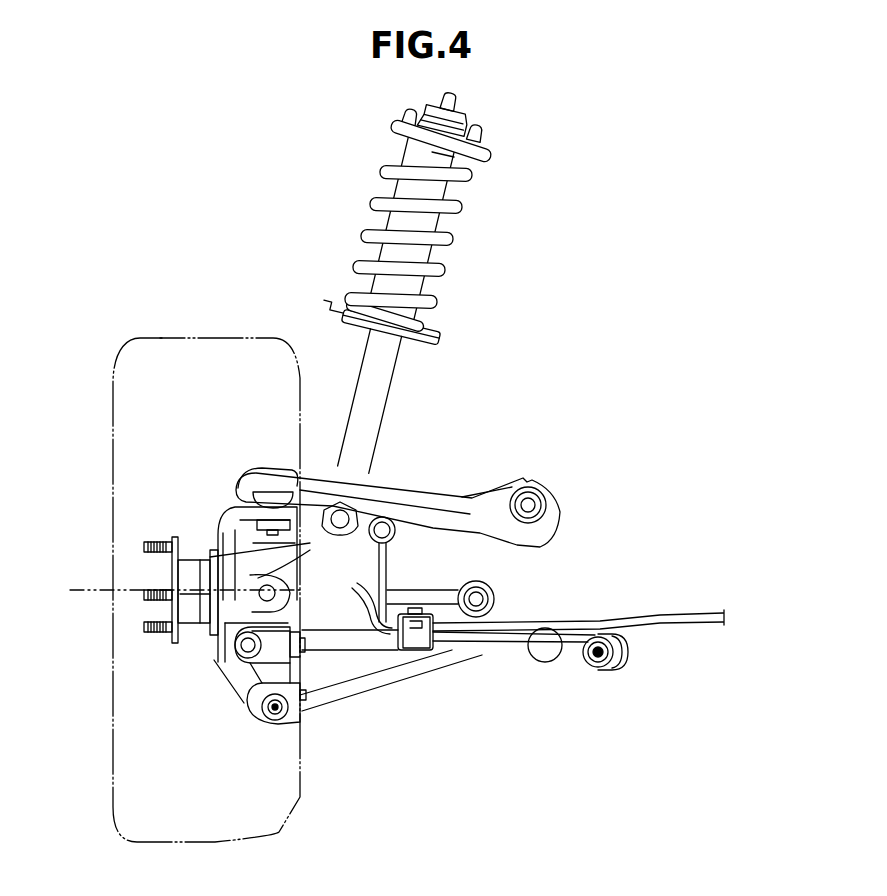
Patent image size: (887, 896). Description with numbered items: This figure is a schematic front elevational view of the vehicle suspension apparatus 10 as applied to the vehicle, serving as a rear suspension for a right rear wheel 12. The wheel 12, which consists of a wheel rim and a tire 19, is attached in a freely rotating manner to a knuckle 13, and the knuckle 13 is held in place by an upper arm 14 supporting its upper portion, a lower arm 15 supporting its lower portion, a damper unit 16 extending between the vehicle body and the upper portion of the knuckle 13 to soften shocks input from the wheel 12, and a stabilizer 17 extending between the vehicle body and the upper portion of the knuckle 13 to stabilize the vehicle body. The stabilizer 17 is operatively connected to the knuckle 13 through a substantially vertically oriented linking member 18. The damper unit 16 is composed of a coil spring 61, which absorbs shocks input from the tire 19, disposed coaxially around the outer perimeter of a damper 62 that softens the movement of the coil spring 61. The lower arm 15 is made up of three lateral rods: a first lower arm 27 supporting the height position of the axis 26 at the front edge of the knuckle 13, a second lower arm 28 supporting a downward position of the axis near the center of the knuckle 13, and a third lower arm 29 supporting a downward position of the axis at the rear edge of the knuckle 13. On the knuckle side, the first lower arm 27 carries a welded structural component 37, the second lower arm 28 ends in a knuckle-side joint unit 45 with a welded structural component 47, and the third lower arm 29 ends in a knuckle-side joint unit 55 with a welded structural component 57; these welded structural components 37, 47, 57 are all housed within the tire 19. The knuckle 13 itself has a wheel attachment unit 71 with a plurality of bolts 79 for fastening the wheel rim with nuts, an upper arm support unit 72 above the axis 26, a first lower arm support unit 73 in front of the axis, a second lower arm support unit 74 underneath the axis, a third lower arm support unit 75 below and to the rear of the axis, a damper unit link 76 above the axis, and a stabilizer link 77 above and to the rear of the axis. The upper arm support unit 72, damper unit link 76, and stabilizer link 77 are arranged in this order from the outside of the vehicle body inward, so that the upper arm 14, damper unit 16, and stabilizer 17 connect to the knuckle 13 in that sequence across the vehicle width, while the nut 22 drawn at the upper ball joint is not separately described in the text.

The vehicle suspension apparatus 10 is at (207, 78).
The wheel 12 is at (149, 331).
The knuckle 13 is at (193, 663).
The upper arm 14 is at (388, 480).
The lower arm 15 is at (404, 713).
The damper unit 16 is at (478, 224).
The stabilizer 17 is at (668, 605).
The linking member 18 is at (388, 578).
The tire 19 is at (180, 338).
The ball joint nut 22 is at (288, 493).
The axis 26 is at (92, 589).
The first lower arm 27 is at (423, 582).
The second lower arm 28 is at (440, 683).
The third lower arm 29 is at (483, 654).
The welded structural component 37 is at (292, 592).
The knuckle-side joint unit 45 is at (282, 723).
The welded structural component 47 is at (301, 698).
The knuckle-side joint unit 55 is at (273, 653).
The welded structural component 57 is at (301, 645).
The coil spring 61 is at (465, 206).
The damper 62 is at (434, 255).
The wheel attachment unit 71 is at (205, 565).
The upper arm support unit 72 is at (275, 512).
The first lower arm support unit 73 is at (247, 583).
The second lower arm support unit 74 is at (248, 717).
The third lower arm support unit 75 is at (230, 653).
The damper unit link 76 is at (340, 536).
The stabilizer link 77 is at (383, 518).
The bolts 79 is at (147, 547).